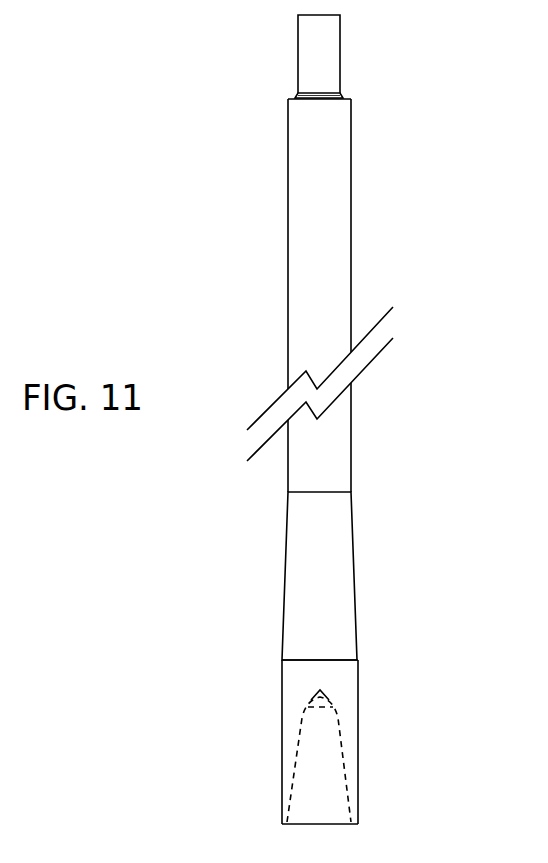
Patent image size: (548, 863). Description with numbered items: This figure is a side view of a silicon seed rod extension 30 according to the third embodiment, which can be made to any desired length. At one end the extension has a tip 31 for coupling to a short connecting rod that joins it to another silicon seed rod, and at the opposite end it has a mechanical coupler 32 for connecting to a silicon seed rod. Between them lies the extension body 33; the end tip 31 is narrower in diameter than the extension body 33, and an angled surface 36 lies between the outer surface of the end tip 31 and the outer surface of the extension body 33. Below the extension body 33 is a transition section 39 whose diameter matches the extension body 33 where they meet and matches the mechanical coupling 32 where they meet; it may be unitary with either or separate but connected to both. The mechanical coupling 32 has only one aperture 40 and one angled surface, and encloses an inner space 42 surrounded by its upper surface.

The silicon seed rod extension 30 is at (272, 201).
The tip 31 is at (298, 52).
The mechanical coupler 32 is at (358, 692).
The extension body 33 is at (352, 209).
The angled surface 36 is at (349, 96).
The transition section 39 is at (284, 580).
The aperture 40 is at (320, 830).
The inner space 42 is at (333, 803).